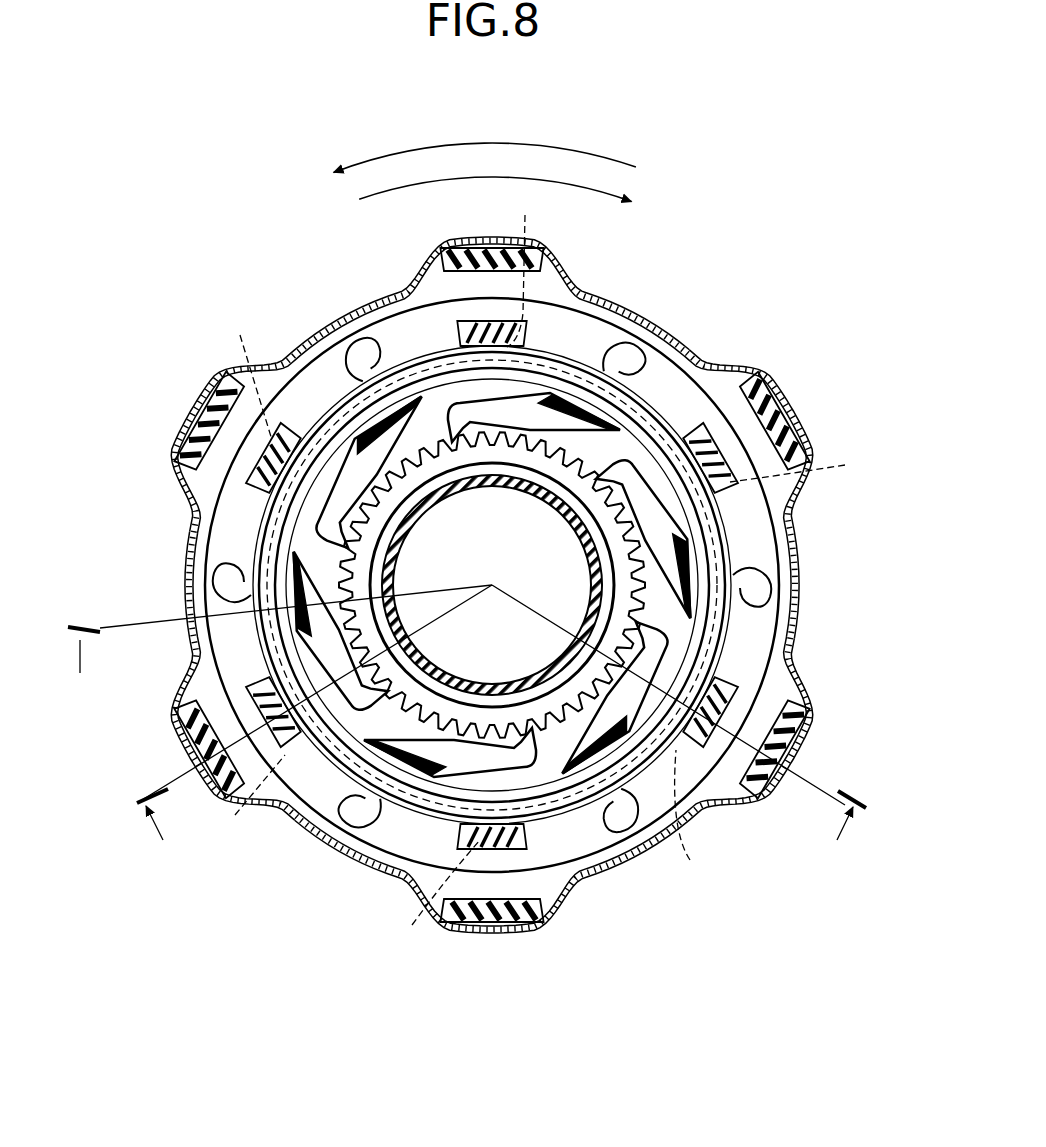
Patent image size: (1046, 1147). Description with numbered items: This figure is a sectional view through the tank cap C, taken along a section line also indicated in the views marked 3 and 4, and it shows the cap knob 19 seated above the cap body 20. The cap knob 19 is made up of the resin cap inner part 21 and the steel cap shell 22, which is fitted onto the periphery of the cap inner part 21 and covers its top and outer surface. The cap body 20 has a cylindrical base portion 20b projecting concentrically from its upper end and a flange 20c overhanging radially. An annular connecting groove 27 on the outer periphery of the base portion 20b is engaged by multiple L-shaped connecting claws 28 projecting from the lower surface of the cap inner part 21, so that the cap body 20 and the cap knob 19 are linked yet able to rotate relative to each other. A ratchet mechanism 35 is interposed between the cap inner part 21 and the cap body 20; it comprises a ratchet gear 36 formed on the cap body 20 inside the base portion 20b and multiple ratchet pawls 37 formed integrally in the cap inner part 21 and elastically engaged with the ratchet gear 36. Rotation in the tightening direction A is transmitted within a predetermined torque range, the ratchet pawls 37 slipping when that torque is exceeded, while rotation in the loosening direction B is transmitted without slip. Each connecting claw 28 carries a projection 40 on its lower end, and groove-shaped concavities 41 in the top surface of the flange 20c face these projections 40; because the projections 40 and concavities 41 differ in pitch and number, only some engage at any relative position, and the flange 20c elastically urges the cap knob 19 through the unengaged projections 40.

The cap knob 19 is at (815, 250).
The cap body 20 is at (530, 490).
The cylindrical base portion 20b is at (363, 390).
The flange 20c is at (397, 323).
The cap inner part 21 is at (745, 378).
The cap shell 22 is at (668, 324).
The annular connecting groove 27 is at (437, 370).
The connecting claws 28 is at (260, 462).
The ratchet mechanism 35 is at (612, 530).
The ratchet gear 36 is at (350, 657).
The ratchet pawls 37 is at (493, 687).
The projections 40 is at (538, 573).
The concavities 41 is at (262, 418).
The tightening direction A is at (553, 183).
The loosening direction B is at (447, 145).
The tank cap C is at (290, 328).
The section line 3 is at (479, 731).
The section line 4 is at (303, 729).